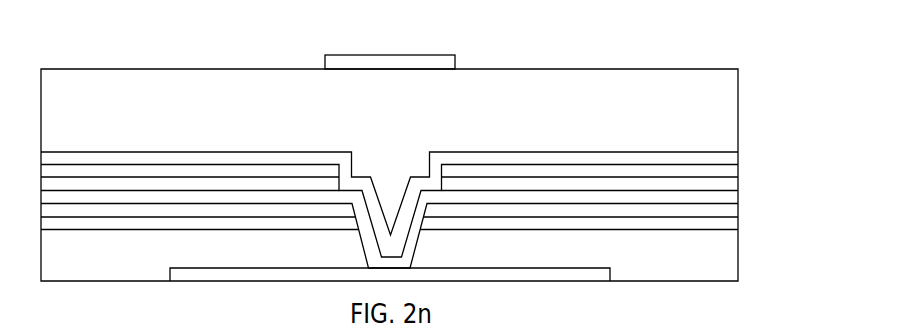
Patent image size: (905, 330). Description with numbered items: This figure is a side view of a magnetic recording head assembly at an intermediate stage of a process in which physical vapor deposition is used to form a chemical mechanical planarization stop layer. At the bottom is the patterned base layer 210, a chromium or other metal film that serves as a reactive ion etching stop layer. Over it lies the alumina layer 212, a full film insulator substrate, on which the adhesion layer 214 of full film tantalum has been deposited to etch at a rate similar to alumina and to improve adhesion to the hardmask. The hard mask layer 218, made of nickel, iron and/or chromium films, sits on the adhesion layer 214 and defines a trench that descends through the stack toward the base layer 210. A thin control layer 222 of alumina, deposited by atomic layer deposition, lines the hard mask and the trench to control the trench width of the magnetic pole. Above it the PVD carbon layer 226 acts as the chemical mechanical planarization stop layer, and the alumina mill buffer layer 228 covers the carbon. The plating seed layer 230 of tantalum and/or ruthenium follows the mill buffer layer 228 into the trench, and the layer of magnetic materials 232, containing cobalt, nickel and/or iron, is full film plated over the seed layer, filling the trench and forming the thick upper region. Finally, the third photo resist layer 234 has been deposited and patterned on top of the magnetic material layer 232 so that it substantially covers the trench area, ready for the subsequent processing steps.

The base layer 210 is at (583, 282).
The alumina layer 212 is at (739, 256).
The adhesion layer 214 is at (739, 224).
The hard mask layer 218 is at (739, 210).
The thin control layer 222 is at (739, 198).
The carbon layer 226 is at (739, 183).
The mill buffer layer 228 is at (739, 169).
The plating seed layer 230 is at (739, 156).
The layer of magnetic materials 232 is at (739, 109).
The third photo resist layer 234 is at (428, 55).